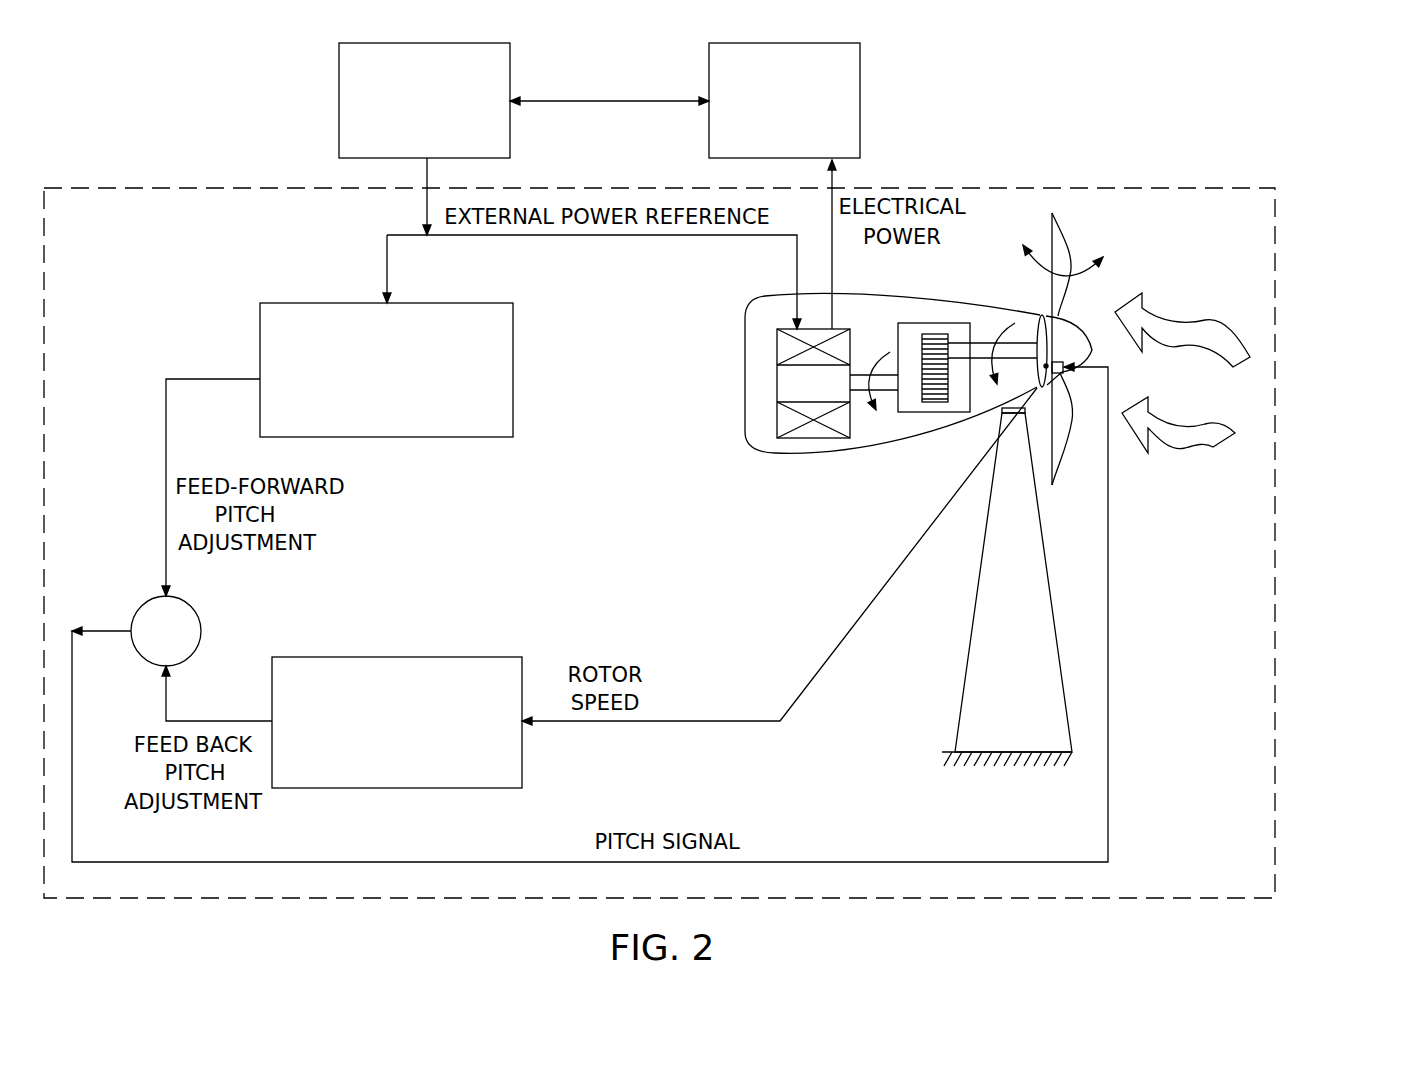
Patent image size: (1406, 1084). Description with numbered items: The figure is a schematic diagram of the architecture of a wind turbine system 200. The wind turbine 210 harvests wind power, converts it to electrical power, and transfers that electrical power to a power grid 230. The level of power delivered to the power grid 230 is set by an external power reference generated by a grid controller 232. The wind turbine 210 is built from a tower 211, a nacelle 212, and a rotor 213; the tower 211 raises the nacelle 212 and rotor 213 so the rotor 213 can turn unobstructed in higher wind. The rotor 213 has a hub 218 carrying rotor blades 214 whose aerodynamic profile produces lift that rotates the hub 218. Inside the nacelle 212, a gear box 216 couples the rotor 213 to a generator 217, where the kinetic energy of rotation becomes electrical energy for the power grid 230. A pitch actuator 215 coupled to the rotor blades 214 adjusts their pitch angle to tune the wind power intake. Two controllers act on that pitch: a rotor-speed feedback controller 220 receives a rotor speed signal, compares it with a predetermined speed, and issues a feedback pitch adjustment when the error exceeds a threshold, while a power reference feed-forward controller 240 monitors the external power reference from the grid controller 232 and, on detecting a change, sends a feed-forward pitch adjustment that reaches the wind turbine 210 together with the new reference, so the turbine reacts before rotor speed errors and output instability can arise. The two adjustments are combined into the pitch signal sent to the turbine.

The wind turbine system 200 is at (1082, 118).
The wind turbine 210 is at (1280, 445).
The tower 211 is at (978, 725).
The nacelle 212 is at (882, 292).
The rotor 213 is at (1042, 302).
The rotor blades 214 is at (1062, 243).
The pitch actuator 215 is at (1090, 349).
The gear box 216 is at (913, 403).
The generator 217 is at (795, 395).
The hub 218 is at (1066, 337).
The rotor-speed feedback controller 220 is at (378, 776).
The power grid 230 is at (766, 140).
The grid controller 232 is at (406, 140).
The power reference feed-forward controller 240 is at (368, 423).